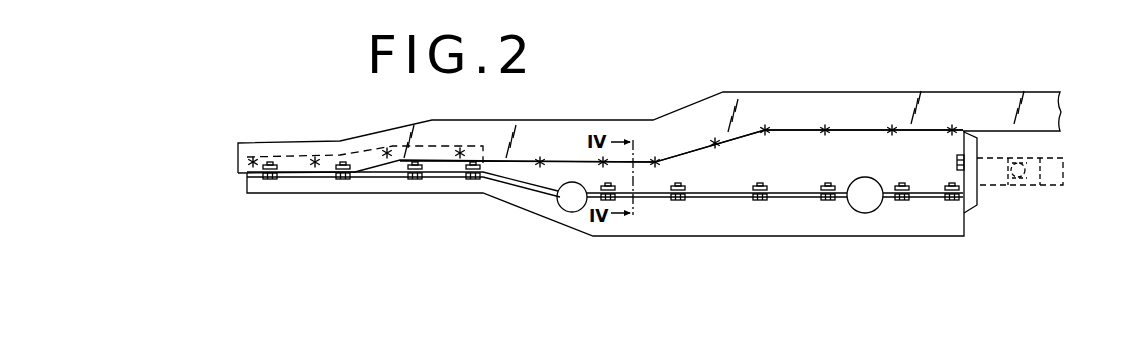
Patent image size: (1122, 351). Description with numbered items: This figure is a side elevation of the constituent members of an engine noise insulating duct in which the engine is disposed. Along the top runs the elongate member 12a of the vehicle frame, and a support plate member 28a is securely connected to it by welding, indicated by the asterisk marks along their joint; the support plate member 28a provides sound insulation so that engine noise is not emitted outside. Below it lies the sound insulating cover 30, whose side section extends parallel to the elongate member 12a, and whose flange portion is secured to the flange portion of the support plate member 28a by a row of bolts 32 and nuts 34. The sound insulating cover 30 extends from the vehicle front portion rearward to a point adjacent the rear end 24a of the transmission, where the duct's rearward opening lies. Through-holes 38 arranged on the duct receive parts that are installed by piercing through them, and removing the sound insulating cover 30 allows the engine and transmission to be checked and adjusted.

The elongate member 12a is at (702, 107).
The support plate member 28a is at (782, 145).
The sound insulating cover 30 is at (770, 222).
The bolt 32 is at (677, 203).
The nut 34 is at (687, 190).
The through-hole 38 is at (571, 200).
The rear end of the transmission 24a is at (993, 173).